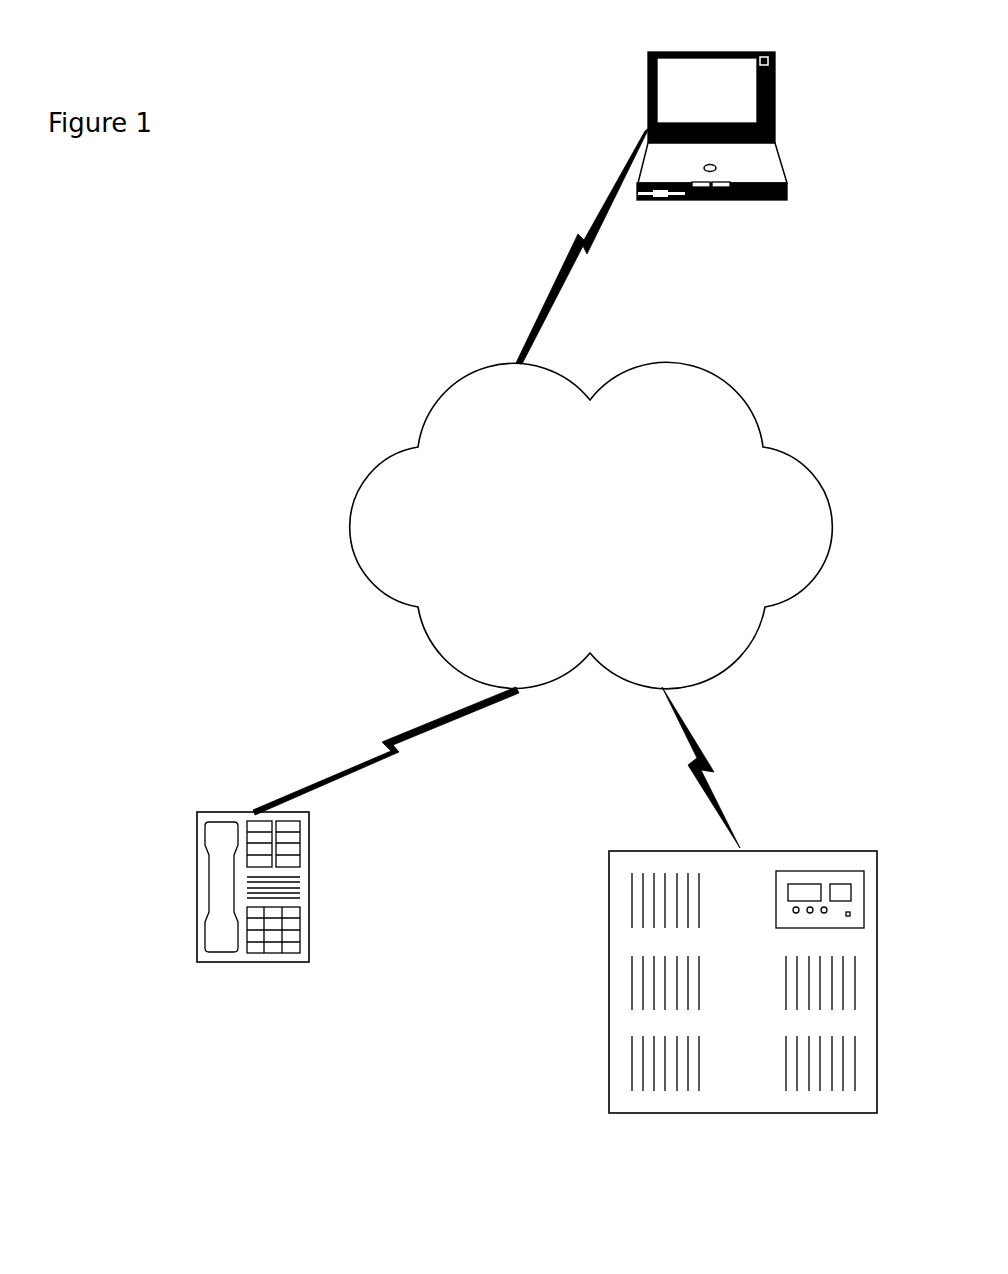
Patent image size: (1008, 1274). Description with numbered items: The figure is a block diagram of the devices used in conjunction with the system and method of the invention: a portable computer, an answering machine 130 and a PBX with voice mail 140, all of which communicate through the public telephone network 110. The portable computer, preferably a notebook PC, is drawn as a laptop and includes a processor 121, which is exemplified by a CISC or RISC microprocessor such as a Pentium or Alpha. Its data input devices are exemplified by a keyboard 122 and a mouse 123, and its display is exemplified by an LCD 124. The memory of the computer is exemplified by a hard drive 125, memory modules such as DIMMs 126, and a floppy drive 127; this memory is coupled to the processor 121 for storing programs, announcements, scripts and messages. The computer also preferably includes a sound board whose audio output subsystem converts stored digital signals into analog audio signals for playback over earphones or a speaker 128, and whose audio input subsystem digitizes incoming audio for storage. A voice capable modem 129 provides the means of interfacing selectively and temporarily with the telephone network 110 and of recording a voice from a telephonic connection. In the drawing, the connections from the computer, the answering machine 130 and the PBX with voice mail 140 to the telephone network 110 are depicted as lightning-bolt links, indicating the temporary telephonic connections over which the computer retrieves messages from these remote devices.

The telephone network 110 is at (665, 363).
The processor 121 is at (737, 241).
The keyboard 122 is at (763, 163).
The mouse 123 is at (716, 168).
The LCD 124 is at (680, 70).
The hard drive 125 is at (737, 241).
The DIMMs 126 is at (748, 198).
The floppy drive 127 is at (652, 202).
The speaker 128 is at (773, 63).
The voice capable modem 129 is at (712, 154).
The answering machine 130 is at (308, 887).
The PBX with voice mail 140 is at (877, 980).